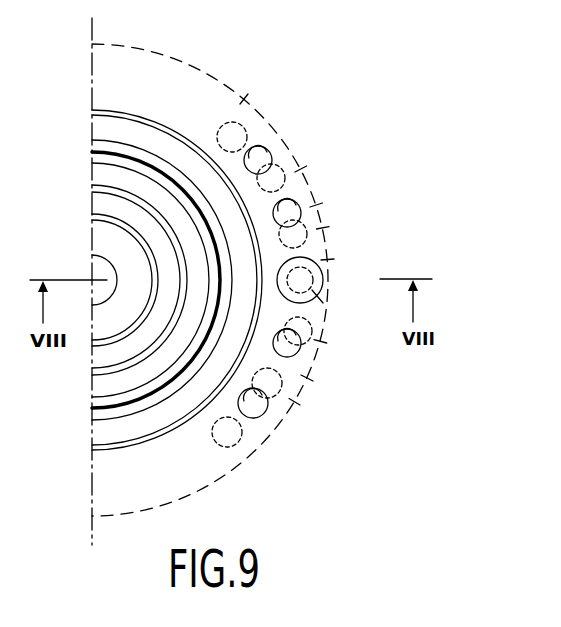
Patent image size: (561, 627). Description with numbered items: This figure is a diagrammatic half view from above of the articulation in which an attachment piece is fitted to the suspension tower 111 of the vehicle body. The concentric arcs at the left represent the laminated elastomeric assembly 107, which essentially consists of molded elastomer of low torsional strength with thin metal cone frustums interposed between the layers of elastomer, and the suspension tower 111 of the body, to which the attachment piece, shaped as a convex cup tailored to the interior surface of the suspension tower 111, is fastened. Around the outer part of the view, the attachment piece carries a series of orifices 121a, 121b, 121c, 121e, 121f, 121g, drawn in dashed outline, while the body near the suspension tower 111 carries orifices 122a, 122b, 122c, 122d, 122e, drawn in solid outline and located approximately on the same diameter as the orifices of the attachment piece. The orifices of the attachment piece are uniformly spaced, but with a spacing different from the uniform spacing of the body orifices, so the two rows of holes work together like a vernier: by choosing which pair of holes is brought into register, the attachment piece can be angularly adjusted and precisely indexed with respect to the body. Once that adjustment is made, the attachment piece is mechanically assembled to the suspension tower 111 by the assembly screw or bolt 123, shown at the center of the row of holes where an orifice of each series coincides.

The laminated elastomeric assembly 107 is at (120, 191).
The suspension tower 111 is at (167, 162).
The orifice 121a is at (245, 127).
The orifice 121b is at (283, 170).
The orifice 121c is at (307, 231).
The orifice 121e is at (325, 352).
The orifice 121f is at (305, 418).
The orifice 121g is at (235, 446).
The orifice 122a is at (268, 150).
The orifice 122b is at (297, 207).
The orifice 122c is at (323, 303).
The orifice 122d is at (290, 350).
The orifice 122e is at (267, 418).
The assembly screw or bolt 123 is at (323, 266).